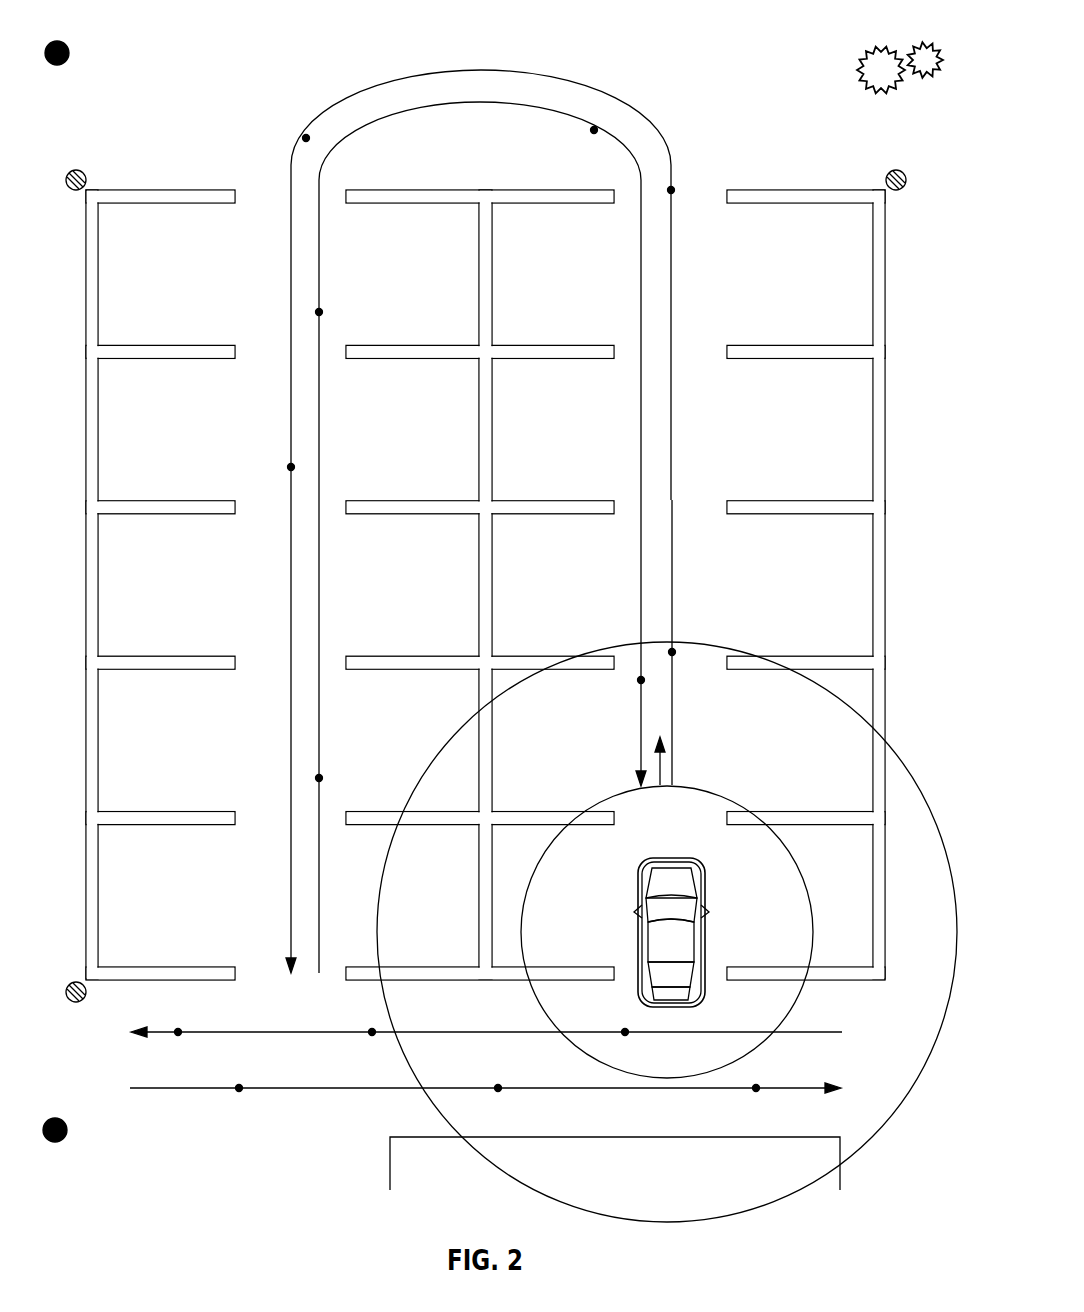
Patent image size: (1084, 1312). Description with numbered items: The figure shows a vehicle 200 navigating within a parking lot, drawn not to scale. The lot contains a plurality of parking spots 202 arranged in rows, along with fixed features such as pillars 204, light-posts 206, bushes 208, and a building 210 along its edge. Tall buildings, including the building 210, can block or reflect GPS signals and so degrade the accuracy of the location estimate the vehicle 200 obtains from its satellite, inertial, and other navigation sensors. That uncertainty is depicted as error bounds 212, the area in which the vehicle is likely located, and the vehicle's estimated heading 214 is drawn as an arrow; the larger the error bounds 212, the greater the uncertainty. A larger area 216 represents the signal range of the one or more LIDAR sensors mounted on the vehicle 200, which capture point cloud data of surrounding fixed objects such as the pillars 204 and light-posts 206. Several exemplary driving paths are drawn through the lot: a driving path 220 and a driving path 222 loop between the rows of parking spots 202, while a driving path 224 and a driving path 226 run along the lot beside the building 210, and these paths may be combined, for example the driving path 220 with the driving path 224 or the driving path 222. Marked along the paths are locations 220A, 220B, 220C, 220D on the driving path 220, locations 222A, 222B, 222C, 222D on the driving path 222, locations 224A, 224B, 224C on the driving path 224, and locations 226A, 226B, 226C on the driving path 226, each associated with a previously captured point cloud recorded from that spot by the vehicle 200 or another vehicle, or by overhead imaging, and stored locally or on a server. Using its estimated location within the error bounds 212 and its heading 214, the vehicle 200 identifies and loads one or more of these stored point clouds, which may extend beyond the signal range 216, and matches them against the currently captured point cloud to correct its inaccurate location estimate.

The vehicle 200 is at (640, 887).
The parking spots 202 is at (172, 247).
The pillars 204 is at (84, 172).
The light-posts 206 is at (67, 43).
The bushes 208 is at (878, 45).
The building 210 is at (713, 1137).
The error bounds 212 is at (718, 797).
The heading 214 is at (662, 765).
The area 216 is at (893, 743).
The driving path 220 is at (488, 508).
The location 220A is at (672, 652).
The location 220B is at (671, 190).
The location 220C is at (306, 138).
The location 220D is at (290, 467).
The driving path 222 is at (481, 515).
The location 222A is at (319, 778).
The location 222B is at (319, 312).
The location 222C is at (594, 130).
The location 222D is at (641, 680).
The driving path 224 is at (485, 1107).
The location 224A is at (239, 1088).
The location 224B is at (498, 1088).
The location 224C is at (756, 1088).
The driving path 226 is at (486, 1020).
The location 226A is at (625, 1032).
The location 226B is at (372, 1031).
The location 226C is at (178, 1032).